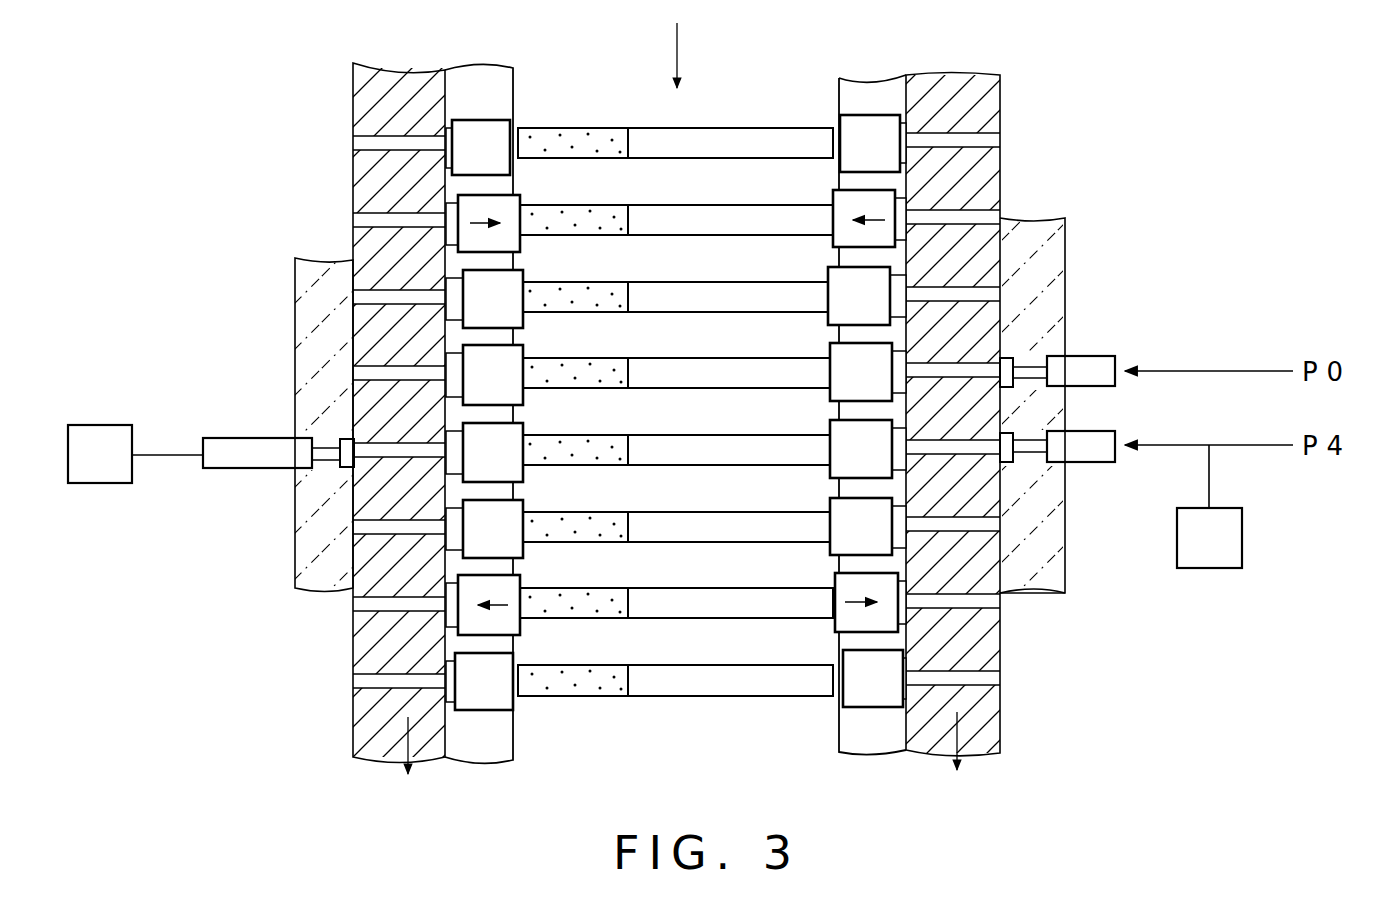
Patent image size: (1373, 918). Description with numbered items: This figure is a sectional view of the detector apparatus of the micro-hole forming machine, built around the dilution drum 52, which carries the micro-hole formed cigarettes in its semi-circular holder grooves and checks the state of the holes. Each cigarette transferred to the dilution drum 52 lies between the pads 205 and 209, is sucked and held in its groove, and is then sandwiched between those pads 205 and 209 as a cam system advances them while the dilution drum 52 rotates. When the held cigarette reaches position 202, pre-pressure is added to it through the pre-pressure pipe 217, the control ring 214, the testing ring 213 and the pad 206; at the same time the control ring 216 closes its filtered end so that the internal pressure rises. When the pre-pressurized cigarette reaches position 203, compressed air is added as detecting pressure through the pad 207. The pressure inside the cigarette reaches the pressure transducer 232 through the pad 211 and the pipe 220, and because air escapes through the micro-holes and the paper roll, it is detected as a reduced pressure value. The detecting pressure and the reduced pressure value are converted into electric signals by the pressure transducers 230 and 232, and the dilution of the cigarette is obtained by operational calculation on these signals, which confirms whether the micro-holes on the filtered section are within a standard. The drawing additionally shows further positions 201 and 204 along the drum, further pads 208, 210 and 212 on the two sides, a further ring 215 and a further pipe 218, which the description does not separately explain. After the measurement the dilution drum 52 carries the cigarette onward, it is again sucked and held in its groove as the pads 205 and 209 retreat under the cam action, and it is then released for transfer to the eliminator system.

The dilution drum 52 is at (1024, 128).
The tube 201 is at (720, 128).
The position 202 is at (688, 365).
The position 203 is at (688, 445).
The tube 204 is at (691, 525).
The pad 205 is at (840, 128).
The pad 206 is at (833, 360).
The pad 207 is at (833, 438).
The right block 208 is at (832, 512).
The pad 209 is at (512, 128).
The left block 210 is at (523, 360).
The pad 211 is at (523, 438).
The left block 212 is at (525, 513).
The testing ring 213 is at (947, 80).
The control ring 214 is at (1040, 220).
The left wall 215 is at (388, 75).
The control ring 216 is at (327, 258).
The pre-pressure pipe 217 is at (1090, 358).
The pressure inlet 218 is at (1093, 460).
The pipe 220 is at (233, 438).
The pressure transducer 230 is at (1242, 536).
The pressure transducer 232 is at (100, 485).